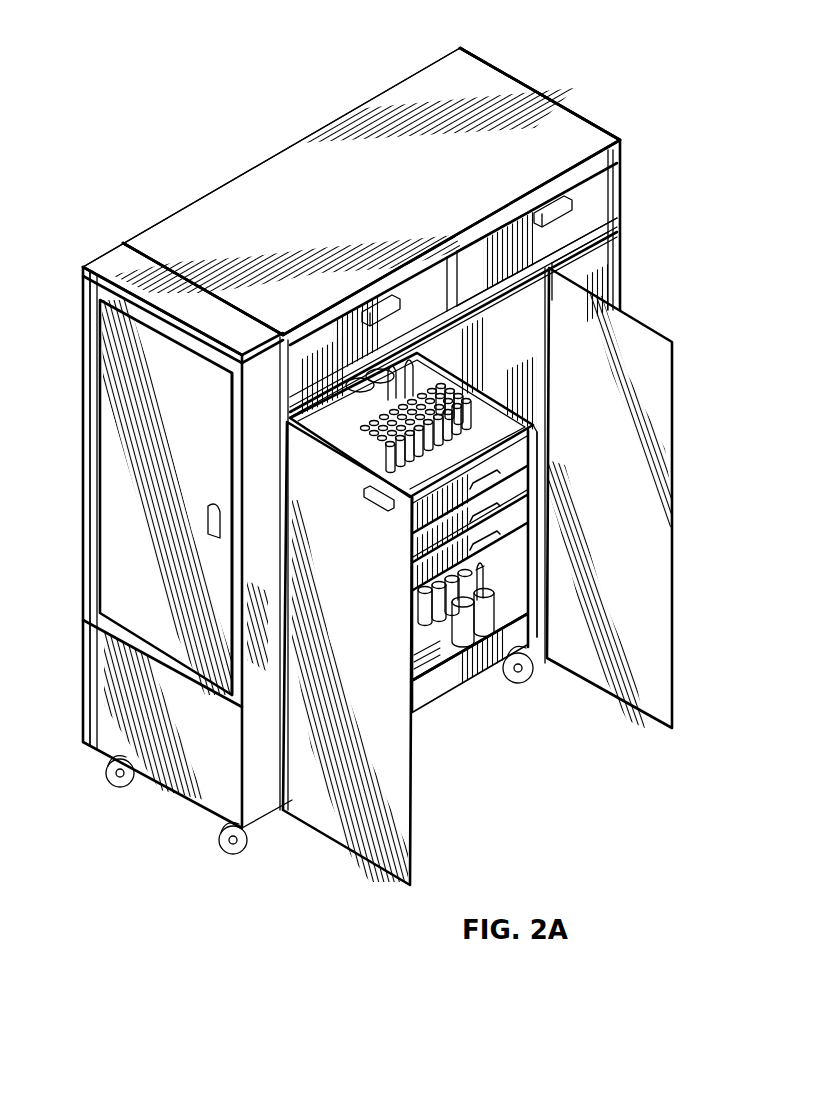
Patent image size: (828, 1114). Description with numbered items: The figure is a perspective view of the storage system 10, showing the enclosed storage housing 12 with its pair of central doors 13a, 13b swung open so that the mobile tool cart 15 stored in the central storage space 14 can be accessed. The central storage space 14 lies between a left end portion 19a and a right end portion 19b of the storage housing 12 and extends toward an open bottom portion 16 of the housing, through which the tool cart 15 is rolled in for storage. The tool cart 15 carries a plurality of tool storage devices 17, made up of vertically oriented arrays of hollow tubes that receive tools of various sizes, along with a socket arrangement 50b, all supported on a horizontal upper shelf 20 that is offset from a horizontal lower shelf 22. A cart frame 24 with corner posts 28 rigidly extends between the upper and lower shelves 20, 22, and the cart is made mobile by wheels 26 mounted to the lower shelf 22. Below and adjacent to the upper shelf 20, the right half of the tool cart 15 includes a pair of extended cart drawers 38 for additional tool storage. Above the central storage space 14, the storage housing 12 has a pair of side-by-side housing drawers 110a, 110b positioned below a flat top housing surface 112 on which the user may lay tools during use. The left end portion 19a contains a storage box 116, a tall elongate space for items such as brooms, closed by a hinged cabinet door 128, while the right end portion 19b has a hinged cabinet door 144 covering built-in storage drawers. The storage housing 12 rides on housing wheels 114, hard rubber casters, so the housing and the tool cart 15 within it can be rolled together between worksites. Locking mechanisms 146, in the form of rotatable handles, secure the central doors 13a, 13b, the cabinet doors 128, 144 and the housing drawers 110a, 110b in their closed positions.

The storage system 10 is at (194, 106).
The storage housing 12 is at (81, 267).
The central door 13a is at (360, 589).
The central door 13b is at (652, 489).
The central storage space 14 is at (535, 318).
The mobile tool cart 15 is at (465, 692).
The open bottom portion 16 is at (462, 716).
The tool storage devices 17 is at (368, 355).
The left end portion 19a is at (101, 241).
The right end portion 19b is at (447, 48).
The upper shelf 20 is at (488, 451).
The lower shelf 22 is at (433, 656).
The cart frame 24 is at (538, 596).
The wheels 26 is at (515, 684).
The corner posts 28 is at (525, 565).
The extended cart drawers 38 is at (512, 488).
The socket arrangement 50b is at (290, 410).
The housing drawer 110a is at (428, 310).
The housing drawer 110b is at (603, 212).
The top housing surface 112 is at (408, 183).
The housing wheels 114 is at (125, 788).
The storage box 116 is at (110, 483).
The hinged cabinet door 128 is at (190, 460).
The hinged cabinet door 144 is at (605, 284).
The locking mechanisms 146 is at (213, 540).